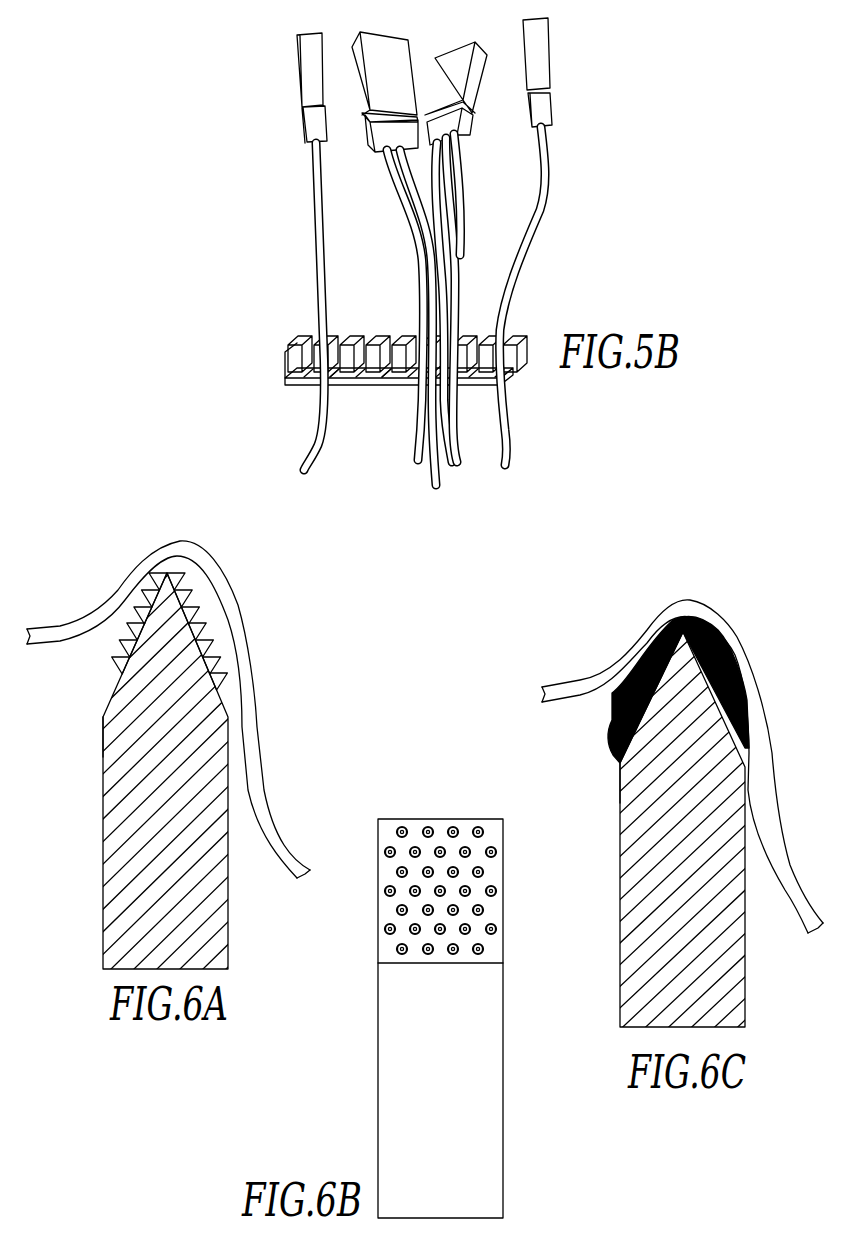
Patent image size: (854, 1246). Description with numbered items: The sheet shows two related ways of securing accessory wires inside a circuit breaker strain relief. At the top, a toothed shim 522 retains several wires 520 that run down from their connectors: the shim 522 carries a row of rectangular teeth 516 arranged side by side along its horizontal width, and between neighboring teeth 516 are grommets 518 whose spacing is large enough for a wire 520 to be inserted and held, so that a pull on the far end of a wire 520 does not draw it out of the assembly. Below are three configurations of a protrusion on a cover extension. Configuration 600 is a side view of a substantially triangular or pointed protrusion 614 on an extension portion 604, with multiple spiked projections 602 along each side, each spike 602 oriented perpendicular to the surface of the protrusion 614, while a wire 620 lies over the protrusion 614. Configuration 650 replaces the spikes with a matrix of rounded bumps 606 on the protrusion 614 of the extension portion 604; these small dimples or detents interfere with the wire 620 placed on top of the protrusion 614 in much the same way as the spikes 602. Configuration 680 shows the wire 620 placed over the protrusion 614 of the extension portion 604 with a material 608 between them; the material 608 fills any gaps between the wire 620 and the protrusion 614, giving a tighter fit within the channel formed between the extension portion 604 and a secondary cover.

In FIG. 5B, the rectangular teeth 516 is at (330, 340).
In FIG. 5B, the grommets 518 is at (347, 383).
In FIG. 5B, the wires 520 is at (310, 222).
In FIG. 5B, the shim 522 is at (294, 356).
In FIG. 6A, the configuration 600 is at (140, 530).
In FIG. 6A, the spiked projections 602 is at (205, 615).
In FIG. 6A, the extension portion 604 is at (112, 750).
In FIG. 6B, the extension portion 604 is at (380, 1075).
In FIG. 6C, the extension portion 604 is at (733, 952).
In FIG. 6B, the rounded bumps 606 is at (428, 821).
In FIG. 6C, the material 608 is at (615, 718).
In FIG. 6A, the protrusion 614 is at (112, 697).
In FIG. 6B, the protrusion 614 is at (388, 950).
In FIG. 6C, the protrusion 614 is at (620, 763).
In FIG. 6A, the wire 620 is at (205, 560).
In FIG. 6C, the wire 620 is at (747, 665).
In FIG. 6B, the configuration 650 is at (441, 780).
In FIG. 6C, the configuration 680 is at (730, 586).